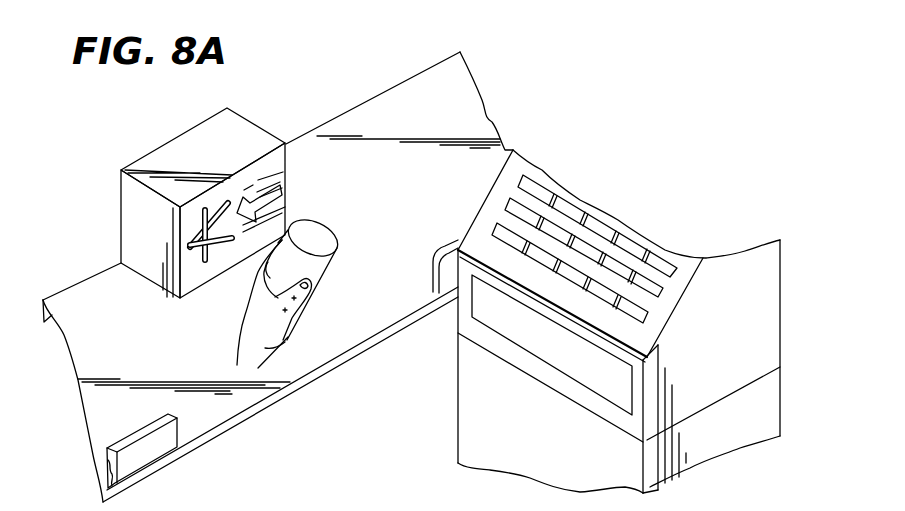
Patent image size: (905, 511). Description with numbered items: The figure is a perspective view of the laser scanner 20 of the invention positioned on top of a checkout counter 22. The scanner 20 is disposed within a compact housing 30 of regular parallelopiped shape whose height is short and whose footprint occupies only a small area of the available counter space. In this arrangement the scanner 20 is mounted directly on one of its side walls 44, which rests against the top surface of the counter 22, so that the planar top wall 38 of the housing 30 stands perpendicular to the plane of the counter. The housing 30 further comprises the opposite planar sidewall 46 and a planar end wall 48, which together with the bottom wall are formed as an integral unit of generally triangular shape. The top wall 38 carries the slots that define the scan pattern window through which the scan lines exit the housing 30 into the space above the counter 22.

The scanner 20 is at (268, 117).
The counter 22 is at (492, 123).
The housing 30 is at (148, 156).
The top wall 38 is at (287, 178).
The sidewall 44 is at (205, 268).
The sidewall 46 is at (193, 130).
The end wall 48 is at (127, 224).